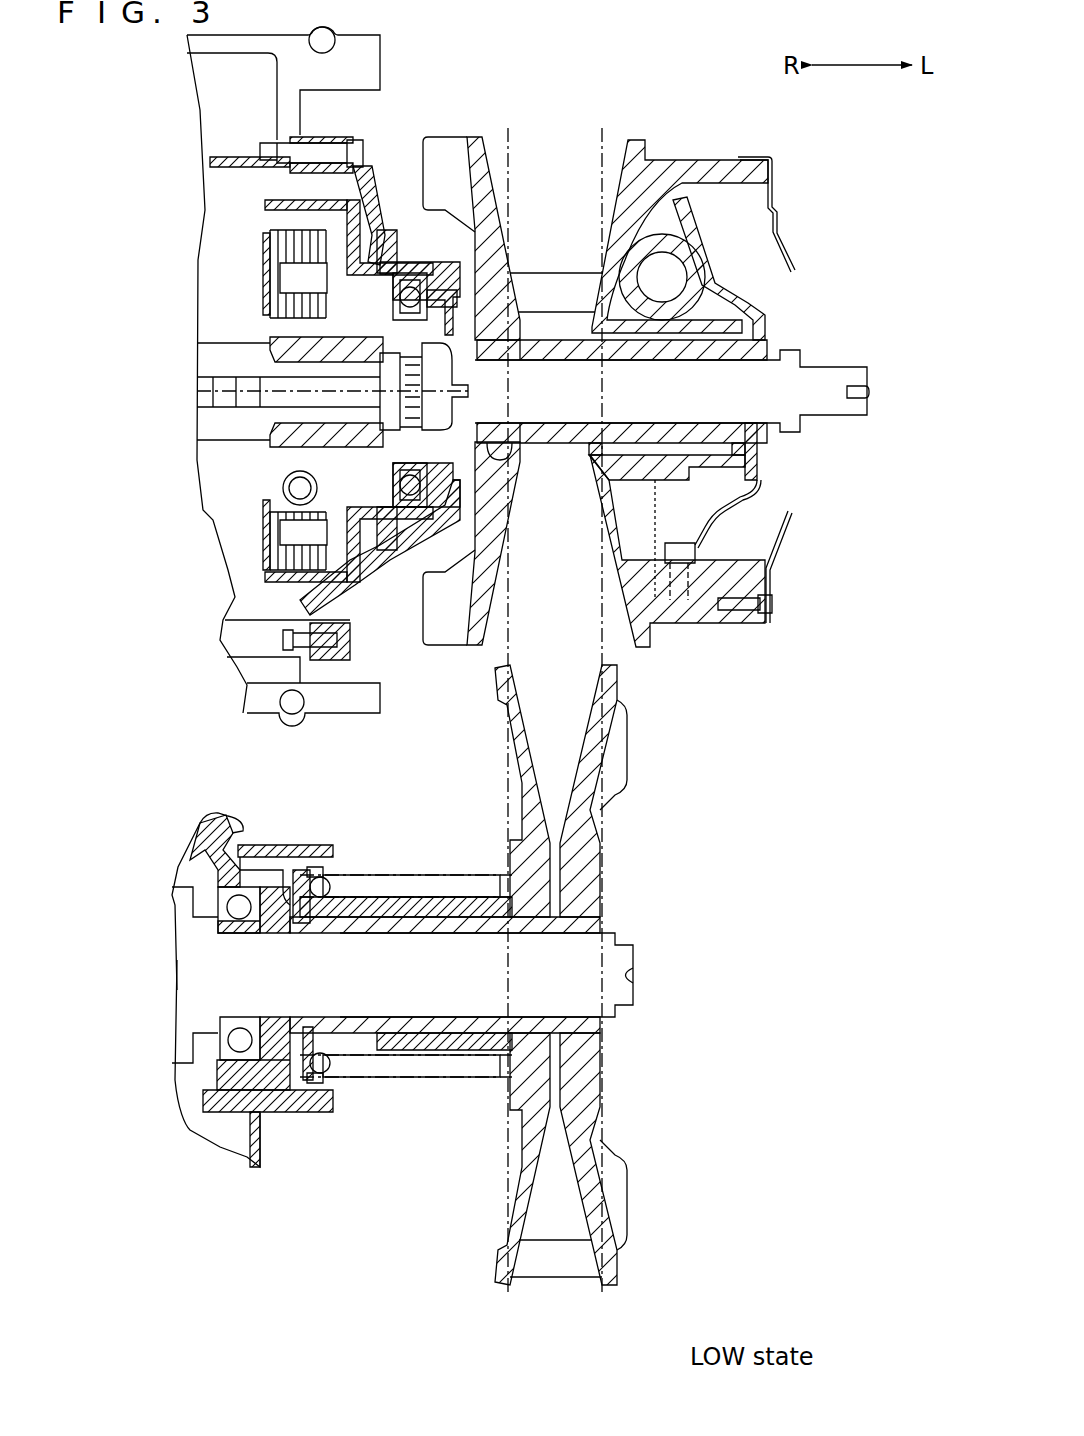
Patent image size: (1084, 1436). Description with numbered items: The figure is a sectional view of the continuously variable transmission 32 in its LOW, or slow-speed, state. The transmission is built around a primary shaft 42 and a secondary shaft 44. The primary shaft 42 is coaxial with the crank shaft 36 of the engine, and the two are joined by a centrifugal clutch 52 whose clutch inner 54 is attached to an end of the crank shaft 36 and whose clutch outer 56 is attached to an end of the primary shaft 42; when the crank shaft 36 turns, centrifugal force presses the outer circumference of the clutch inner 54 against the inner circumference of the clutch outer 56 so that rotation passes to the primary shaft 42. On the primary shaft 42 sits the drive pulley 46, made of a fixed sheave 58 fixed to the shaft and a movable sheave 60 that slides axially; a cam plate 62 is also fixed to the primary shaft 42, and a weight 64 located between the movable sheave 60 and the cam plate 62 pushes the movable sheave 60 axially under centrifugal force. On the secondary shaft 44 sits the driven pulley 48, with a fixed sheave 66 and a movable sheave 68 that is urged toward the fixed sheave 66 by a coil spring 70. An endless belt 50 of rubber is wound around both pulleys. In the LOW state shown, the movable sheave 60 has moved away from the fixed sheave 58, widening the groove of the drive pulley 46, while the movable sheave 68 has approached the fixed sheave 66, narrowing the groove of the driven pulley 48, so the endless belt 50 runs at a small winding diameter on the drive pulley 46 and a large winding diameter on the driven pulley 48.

The continuously variable transmission 32 is at (805, 598).
The crank shaft 36 is at (216, 365).
The primary shaft 42 is at (822, 383).
The secondary shaft 44 is at (225, 975).
The drive pulley 46 is at (597, 58).
The driven pulley 48 is at (597, 1330).
The endless belt 50 is at (603, 813).
The centrifugal clutch 52 is at (243, 215).
The clutch inner 54 is at (287, 280).
The clutch outer 56 is at (300, 200).
The fixed sheave 58 is at (487, 195).
The movable sheave 60 is at (612, 215).
The cam plate 62 is at (762, 300).
The weight 64 is at (700, 228).
The fixed sheave 66 is at (575, 1200).
The movable sheave 68 is at (540, 1200).
The coil spring 70 is at (375, 885).